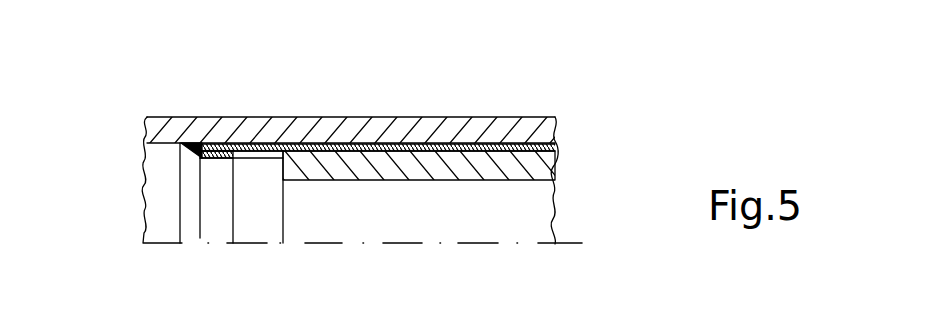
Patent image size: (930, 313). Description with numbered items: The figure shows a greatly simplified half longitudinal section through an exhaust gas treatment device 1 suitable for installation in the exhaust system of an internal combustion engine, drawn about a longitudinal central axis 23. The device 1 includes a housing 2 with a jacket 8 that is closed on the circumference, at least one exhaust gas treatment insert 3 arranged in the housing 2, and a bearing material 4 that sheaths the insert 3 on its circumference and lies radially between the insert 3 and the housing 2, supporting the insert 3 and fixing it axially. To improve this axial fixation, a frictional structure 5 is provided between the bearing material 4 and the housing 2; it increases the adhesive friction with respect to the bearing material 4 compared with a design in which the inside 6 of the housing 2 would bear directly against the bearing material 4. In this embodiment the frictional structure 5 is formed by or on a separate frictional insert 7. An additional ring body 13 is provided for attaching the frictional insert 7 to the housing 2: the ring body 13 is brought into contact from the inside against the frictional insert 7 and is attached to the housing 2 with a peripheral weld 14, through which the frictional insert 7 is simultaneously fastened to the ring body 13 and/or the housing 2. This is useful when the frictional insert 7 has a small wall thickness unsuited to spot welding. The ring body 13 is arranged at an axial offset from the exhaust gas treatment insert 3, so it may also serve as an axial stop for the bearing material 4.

The exhaust gas treatment device 1 is at (605, 129).
The housing 2 is at (521, 113).
The exhaust gas treatment insert 3 is at (420, 223).
The bearing material 4 is at (477, 172).
The frictional structure 5 is at (345, 140).
The inside 6 is at (147, 162).
The frictional insert 7 is at (441, 139).
The jacket 8 is at (270, 128).
The ring body 13 is at (221, 158).
The peripheral weld 14 is at (190, 150).
The longitudinal central axis 23 is at (166, 244).